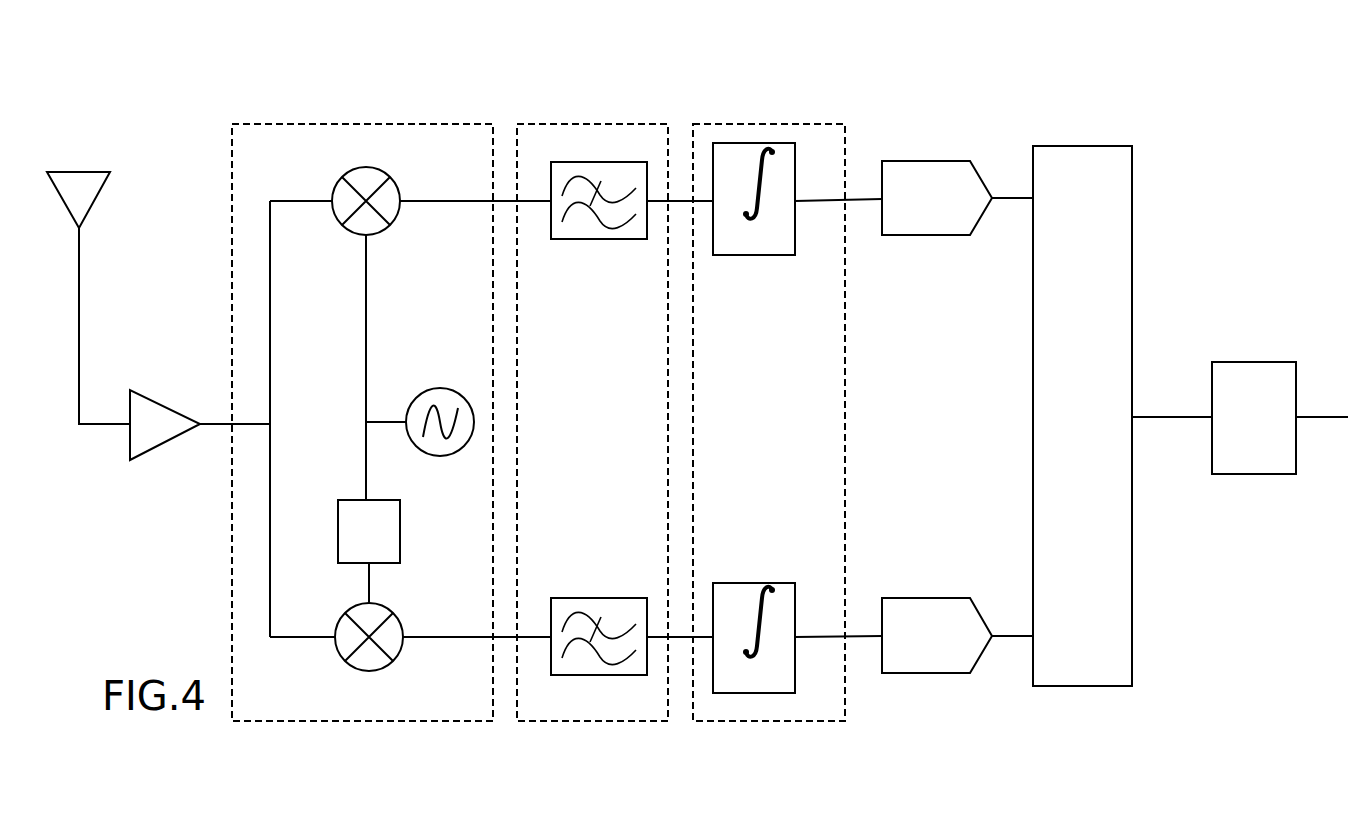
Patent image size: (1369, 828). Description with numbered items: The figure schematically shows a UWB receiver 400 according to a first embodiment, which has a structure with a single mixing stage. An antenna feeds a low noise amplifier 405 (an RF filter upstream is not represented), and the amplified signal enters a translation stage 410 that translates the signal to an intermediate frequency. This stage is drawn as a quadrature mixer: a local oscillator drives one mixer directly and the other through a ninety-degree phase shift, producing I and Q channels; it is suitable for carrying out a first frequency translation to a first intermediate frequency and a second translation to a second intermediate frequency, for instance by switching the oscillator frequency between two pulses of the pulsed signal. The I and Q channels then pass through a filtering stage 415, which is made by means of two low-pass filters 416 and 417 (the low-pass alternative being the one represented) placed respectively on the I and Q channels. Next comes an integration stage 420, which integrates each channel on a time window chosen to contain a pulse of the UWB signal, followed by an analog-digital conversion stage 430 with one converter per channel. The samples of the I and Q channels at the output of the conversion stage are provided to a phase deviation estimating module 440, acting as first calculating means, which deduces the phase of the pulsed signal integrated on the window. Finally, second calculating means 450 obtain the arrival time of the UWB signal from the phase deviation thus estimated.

The receiver system 400 is at (166, 140).
The low noise amplifier 405 is at (157, 410).
The translation stage 410 is at (330, 128).
The filtering stage 415 is at (598, 130).
The filter 416 is at (586, 243).
The filter 417 is at (592, 597).
The integration stage 420 is at (788, 130).
The analog-digital conversion stage 430 is at (916, 160).
The phase deviation estimating module 440 is at (1078, 146).
The second calculating means 450 is at (1247, 362).